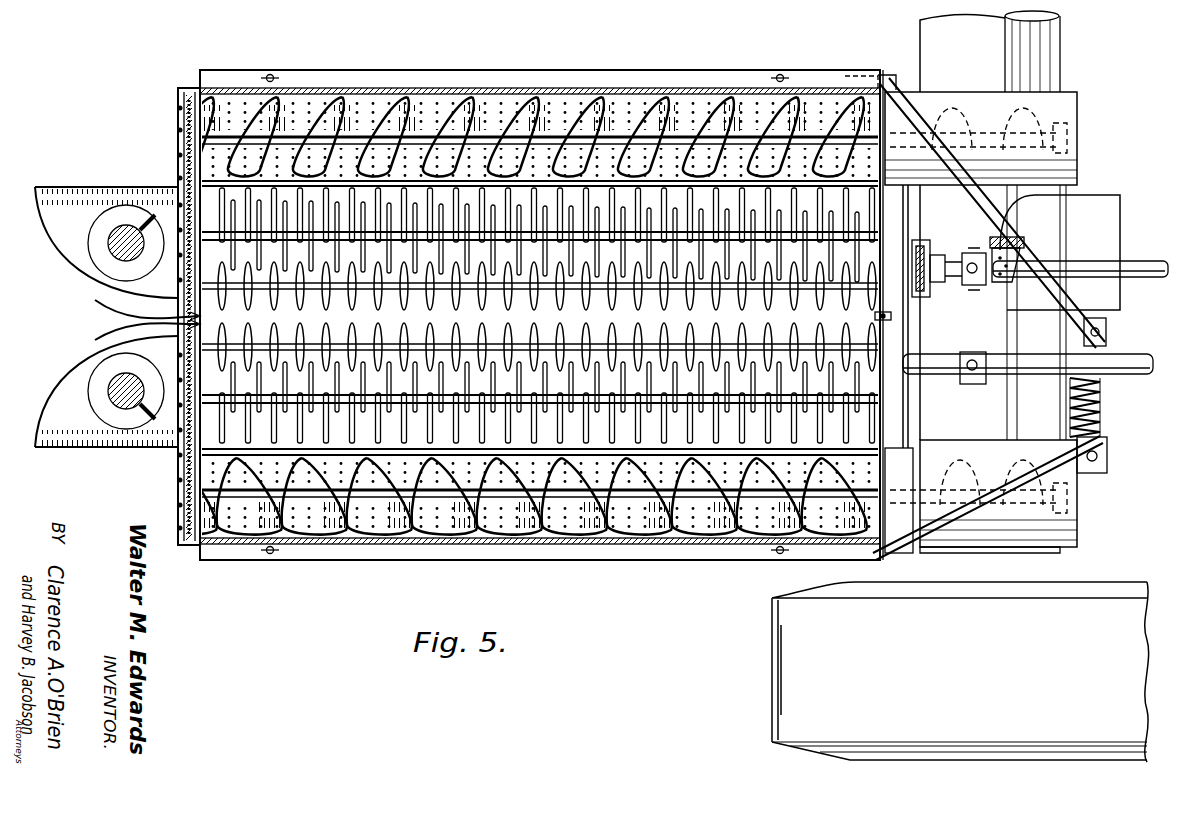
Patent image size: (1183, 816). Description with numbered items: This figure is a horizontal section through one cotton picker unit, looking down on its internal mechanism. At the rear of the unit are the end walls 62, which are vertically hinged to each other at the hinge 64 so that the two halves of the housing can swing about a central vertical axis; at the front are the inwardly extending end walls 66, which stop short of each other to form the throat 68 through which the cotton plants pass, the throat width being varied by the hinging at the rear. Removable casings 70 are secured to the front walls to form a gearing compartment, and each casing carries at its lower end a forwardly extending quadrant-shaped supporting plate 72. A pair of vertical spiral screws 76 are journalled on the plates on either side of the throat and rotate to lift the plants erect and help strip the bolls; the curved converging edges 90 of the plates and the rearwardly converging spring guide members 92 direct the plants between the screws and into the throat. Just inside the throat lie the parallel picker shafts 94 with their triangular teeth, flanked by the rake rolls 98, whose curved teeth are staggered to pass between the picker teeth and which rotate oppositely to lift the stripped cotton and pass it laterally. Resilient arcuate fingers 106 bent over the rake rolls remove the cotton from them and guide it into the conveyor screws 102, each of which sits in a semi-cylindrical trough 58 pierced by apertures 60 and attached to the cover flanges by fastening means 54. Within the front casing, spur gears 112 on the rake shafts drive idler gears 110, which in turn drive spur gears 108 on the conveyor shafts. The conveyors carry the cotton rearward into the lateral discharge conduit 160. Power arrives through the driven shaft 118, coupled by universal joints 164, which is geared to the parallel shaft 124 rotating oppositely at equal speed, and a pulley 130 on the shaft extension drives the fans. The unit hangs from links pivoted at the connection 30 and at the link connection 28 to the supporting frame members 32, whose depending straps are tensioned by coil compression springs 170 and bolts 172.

The link connection 28 is at (1024, 245).
The pivotal connection 30 is at (1012, 237).
The supporting frame member 32 is at (1040, 278).
The fastening means 54 is at (780, 72).
The semi-cylindrical bottom casing member or trough 58 is at (388, 92).
The apertures 60 is at (632, 536).
The rear panel or end wall 62 is at (910, 222).
The hinge 64 is at (893, 316).
The end wall 66 is at (186, 178).
The throat 68 is at (160, 322).
The casing 70 is at (178, 134).
The supporting plate 72 is at (63, 200).
The spiral screw 76 is at (120, 226).
The curved inwardly converging edge 90 is at (64, 262).
The spring guide member 92 is at (112, 310).
The picker shaft 94 is at (492, 290).
The rake roll 98 is at (425, 236).
The conveyor screw 102 is at (485, 118).
The resilient arcuate finger 106 is at (515, 215).
The spur driving gear 108 is at (180, 110).
The idler gear 110 is at (186, 166).
The spur driving gear 112 is at (172, 256).
The driven shaft 118 is at (1125, 265).
The parallel shaft 124 is at (1128, 372).
The pulley 130 is at (926, 252).
The discharge conduit or casing 160 is at (1055, 58).
The universal joint 164 is at (973, 286).
The coil compression spring 170 is at (1103, 408).
The bolt 172 is at (1107, 447).